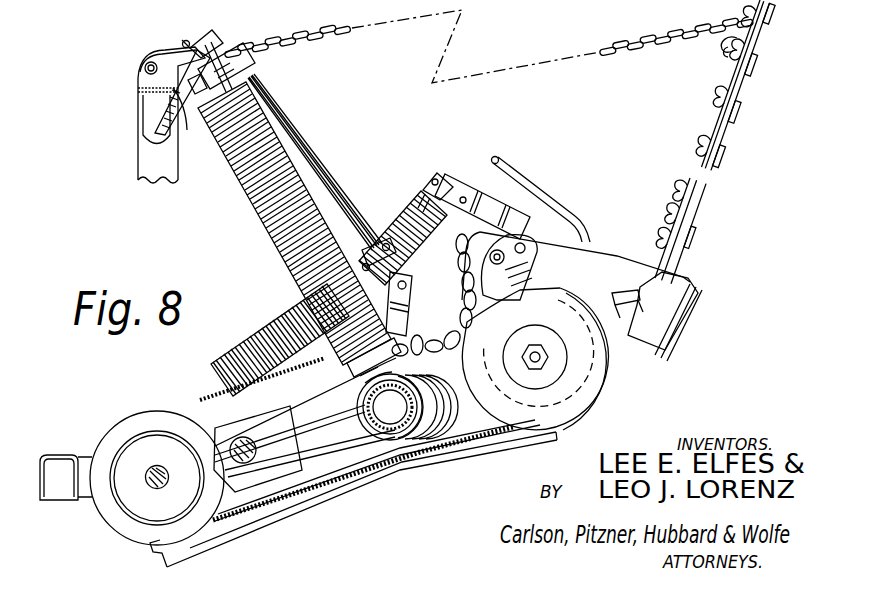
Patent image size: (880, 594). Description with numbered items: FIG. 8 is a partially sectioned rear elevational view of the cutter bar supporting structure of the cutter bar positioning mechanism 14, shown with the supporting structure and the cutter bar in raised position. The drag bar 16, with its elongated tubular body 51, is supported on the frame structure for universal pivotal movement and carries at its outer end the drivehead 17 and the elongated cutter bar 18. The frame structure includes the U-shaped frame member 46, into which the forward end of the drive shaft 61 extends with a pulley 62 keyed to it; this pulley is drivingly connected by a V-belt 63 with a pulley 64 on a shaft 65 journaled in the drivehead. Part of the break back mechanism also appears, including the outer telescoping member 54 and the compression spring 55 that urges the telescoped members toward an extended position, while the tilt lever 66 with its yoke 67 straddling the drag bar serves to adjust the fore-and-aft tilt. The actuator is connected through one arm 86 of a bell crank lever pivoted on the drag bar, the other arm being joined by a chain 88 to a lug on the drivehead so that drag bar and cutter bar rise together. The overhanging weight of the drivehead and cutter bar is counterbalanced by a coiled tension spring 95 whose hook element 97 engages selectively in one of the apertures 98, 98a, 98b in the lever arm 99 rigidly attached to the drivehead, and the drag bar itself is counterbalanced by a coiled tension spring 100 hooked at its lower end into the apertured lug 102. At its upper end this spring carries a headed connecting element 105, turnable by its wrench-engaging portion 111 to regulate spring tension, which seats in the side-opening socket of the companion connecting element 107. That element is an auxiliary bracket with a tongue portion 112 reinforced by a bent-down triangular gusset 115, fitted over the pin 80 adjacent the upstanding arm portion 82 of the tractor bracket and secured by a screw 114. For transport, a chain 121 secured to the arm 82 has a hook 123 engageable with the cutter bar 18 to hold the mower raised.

The cutter bar positioning mechanism 14 is at (333, 194).
The drag bar 16 is at (355, 440).
The drivehead 17 is at (619, 252).
The cutter bar 18 is at (729, 132).
The U-shaped frame member 46 is at (60, 453).
The tubular body 51 is at (326, 446).
The outer telescoping member 54 is at (400, 440).
The compression spring 55 is at (430, 432).
The drive shaft 61 is at (160, 484).
The pulley 62 is at (122, 518).
The V-belt 63 is at (326, 492).
The pulley 64 is at (608, 380).
The shaft 65 is at (540, 350).
The tilt lever 66 is at (270, 436).
The yoke 67 is at (218, 410).
The pin 80 is at (208, 40).
The upstanding arm portion 82 is at (142, 174).
The bell crank lever arm 86 is at (404, 292).
The chain 88 is at (444, 336).
The coiled tension spring 95 is at (282, 336).
The hook element 97 is at (420, 192).
The aperture 98 is at (434, 178).
The aperture 98a is at (452, 200).
The aperture 98b is at (486, 178).
The lever arm 99 is at (424, 182).
The coiled tension spring 100 is at (268, 232).
The apertured lug 102 is at (362, 378).
The headed connecting element 105 is at (236, 72).
The connecting element 107 is at (165, 52).
The wrench-engaging portion 111 is at (186, 40).
The tongue portion 112 is at (150, 108).
The screw 114 is at (144, 69).
The triangular gusset 115 is at (187, 131).
The chain 121 is at (322, 32).
The hook 123 is at (722, 46).